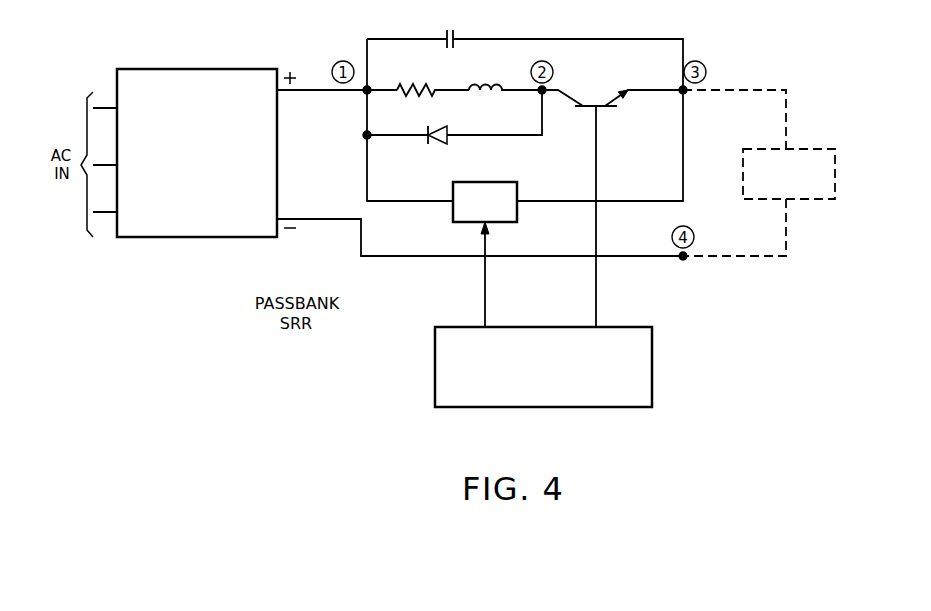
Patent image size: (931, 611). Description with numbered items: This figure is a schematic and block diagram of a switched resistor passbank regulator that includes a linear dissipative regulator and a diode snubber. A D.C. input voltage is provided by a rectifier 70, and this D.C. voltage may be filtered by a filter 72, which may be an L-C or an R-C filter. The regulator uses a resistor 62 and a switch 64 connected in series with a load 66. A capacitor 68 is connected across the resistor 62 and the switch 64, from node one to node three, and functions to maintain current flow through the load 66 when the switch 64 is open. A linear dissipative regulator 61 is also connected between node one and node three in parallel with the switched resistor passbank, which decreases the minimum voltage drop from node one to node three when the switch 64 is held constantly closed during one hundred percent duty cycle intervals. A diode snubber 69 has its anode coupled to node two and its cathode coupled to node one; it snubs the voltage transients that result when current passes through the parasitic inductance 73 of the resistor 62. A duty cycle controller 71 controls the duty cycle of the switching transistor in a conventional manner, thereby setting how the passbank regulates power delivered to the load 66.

The rectifier 70 is at (197, 167).
The filter 72 is at (168, 237).
The capacitor 68 is at (458, 32).
The resistor 62 is at (410, 83).
The parasitic inductance 73 is at (498, 83).
The diode snubber 69 is at (440, 127).
The switch 64 is at (590, 105).
The load 66 is at (810, 147).
The linear dissipative regulator 61 is at (500, 182).
The duty cycle controller 71 is at (652, 345).